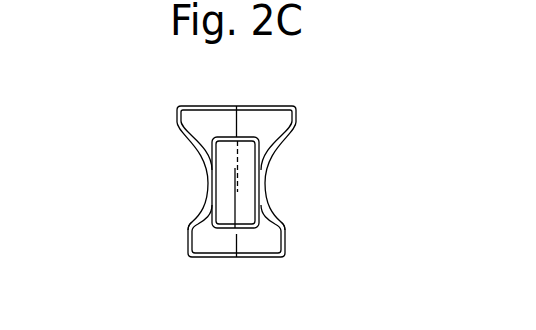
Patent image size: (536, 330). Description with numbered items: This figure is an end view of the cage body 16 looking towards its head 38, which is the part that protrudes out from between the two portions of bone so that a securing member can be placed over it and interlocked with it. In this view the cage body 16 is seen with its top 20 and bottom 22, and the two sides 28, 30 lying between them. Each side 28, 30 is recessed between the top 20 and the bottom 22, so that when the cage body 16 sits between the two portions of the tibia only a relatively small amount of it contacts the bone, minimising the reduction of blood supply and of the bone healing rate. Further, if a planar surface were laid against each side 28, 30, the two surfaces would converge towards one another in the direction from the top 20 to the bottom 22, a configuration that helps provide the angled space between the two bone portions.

The cage body 16 is at (312, 154).
The top 20 is at (275, 106).
The bottom 22 is at (262, 259).
The side 28 is at (284, 227).
The side 30 is at (222, 233).
The head 38 is at (222, 233).